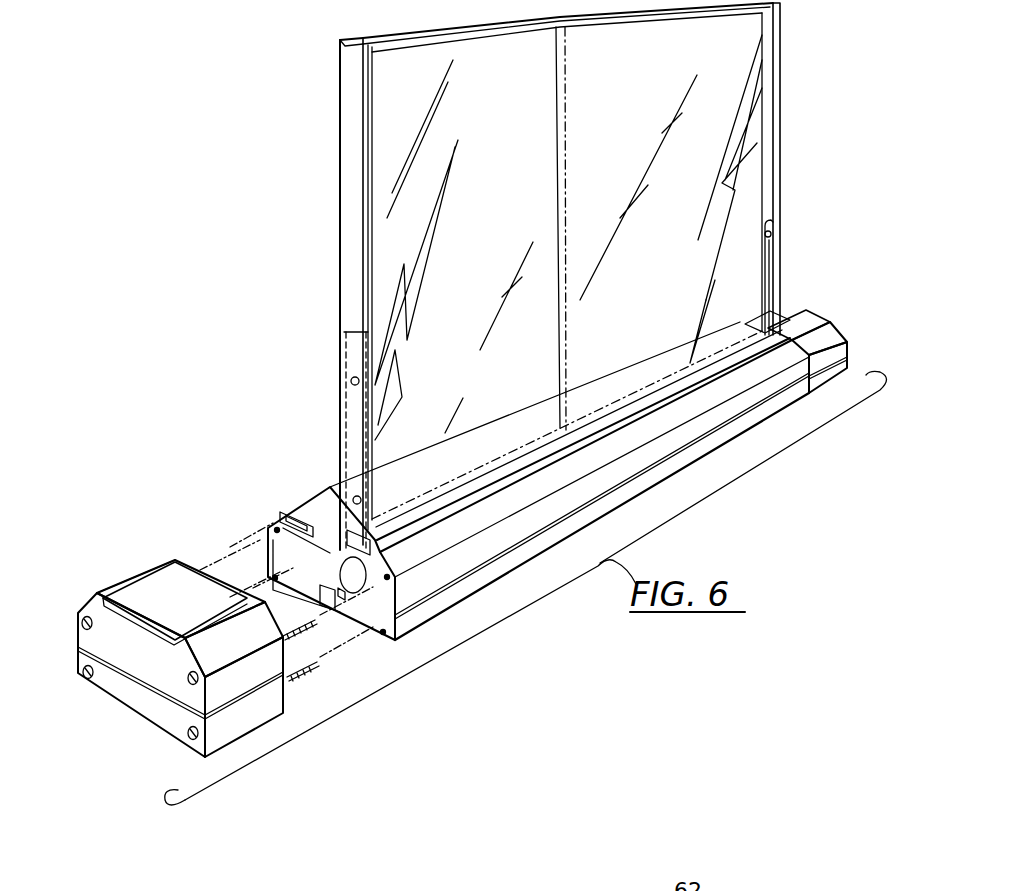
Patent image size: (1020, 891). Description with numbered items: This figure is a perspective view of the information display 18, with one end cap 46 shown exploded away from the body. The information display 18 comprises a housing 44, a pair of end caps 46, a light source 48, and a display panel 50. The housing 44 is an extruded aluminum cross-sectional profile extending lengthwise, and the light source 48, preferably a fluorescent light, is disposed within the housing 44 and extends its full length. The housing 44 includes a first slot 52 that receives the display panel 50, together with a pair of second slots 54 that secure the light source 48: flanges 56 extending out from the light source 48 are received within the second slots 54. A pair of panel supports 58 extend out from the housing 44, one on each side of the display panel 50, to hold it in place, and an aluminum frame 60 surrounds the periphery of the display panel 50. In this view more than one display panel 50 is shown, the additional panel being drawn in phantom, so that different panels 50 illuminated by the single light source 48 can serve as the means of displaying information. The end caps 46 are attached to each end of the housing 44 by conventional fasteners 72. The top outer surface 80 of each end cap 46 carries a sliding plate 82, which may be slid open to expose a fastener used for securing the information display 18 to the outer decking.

The information display 18 is at (286, 143).
The housing 44 is at (672, 483).
The end cap 46 is at (122, 704).
The light source 48 is at (290, 580).
The display panel 50 is at (515, 188).
The first slot 52 is at (377, 540).
The second slot 54 is at (325, 515).
The flange 56 is at (282, 552).
The panel support 58 is at (345, 405).
The aluminum frame 60 is at (347, 67).
The fastener 72 is at (82, 626).
The top outer surface 80 is at (115, 584).
The sliding plate 82 is at (157, 587).